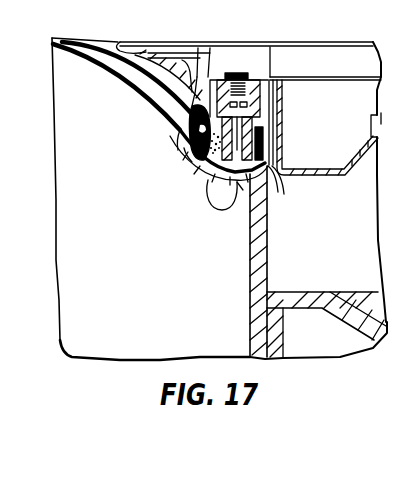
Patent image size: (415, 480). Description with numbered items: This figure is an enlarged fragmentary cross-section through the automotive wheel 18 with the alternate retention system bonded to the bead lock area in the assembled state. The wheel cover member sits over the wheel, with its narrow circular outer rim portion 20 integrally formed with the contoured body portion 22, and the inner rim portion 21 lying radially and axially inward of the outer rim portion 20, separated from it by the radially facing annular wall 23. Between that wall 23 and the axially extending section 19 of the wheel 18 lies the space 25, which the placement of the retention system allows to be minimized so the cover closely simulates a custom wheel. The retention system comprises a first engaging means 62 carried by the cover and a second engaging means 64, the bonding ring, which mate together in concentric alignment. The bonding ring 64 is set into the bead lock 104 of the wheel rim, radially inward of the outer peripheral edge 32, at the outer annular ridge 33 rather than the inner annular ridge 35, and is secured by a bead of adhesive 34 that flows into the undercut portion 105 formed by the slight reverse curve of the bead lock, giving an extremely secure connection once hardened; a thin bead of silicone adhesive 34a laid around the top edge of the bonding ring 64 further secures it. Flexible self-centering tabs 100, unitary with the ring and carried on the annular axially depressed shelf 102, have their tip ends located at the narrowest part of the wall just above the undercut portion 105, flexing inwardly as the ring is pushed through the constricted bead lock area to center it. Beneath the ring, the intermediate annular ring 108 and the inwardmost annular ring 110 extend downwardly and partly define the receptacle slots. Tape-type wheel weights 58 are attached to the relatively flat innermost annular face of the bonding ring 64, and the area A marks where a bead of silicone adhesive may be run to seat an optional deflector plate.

The wheel 18 is at (240, 334).
The axially extending section 19 is at (199, 57).
The outer rim portion 20 is at (152, 43).
The inner rim portion 21 is at (266, 78).
The contoured body portion 22 is at (382, 118).
The radially facing annular wall 23 is at (136, 90).
The space 25 is at (181, 57).
The outer peripheral edge 32 is at (112, 41).
The outer annular ridge 33 is at (162, 52).
The adhesive 34 is at (212, 178).
The thin bead of silicone adhesive 34a is at (209, 73).
The inner annular ridge 35 is at (230, 187).
The tape-type wheel weights 58 is at (283, 192).
The first engaging means 62 is at (270, 84).
The second engaging means 64 is at (283, 100).
The self-centering tabs 100 is at (165, 116).
The annular axially depressed shelf 102 is at (196, 160).
The bead lock 104 is at (178, 146).
The undercut portion 105 is at (183, 128).
The intermediate annular ring 108 is at (243, 190).
The inwardmost annular ring 110 is at (266, 129).
The area A is at (272, 290).